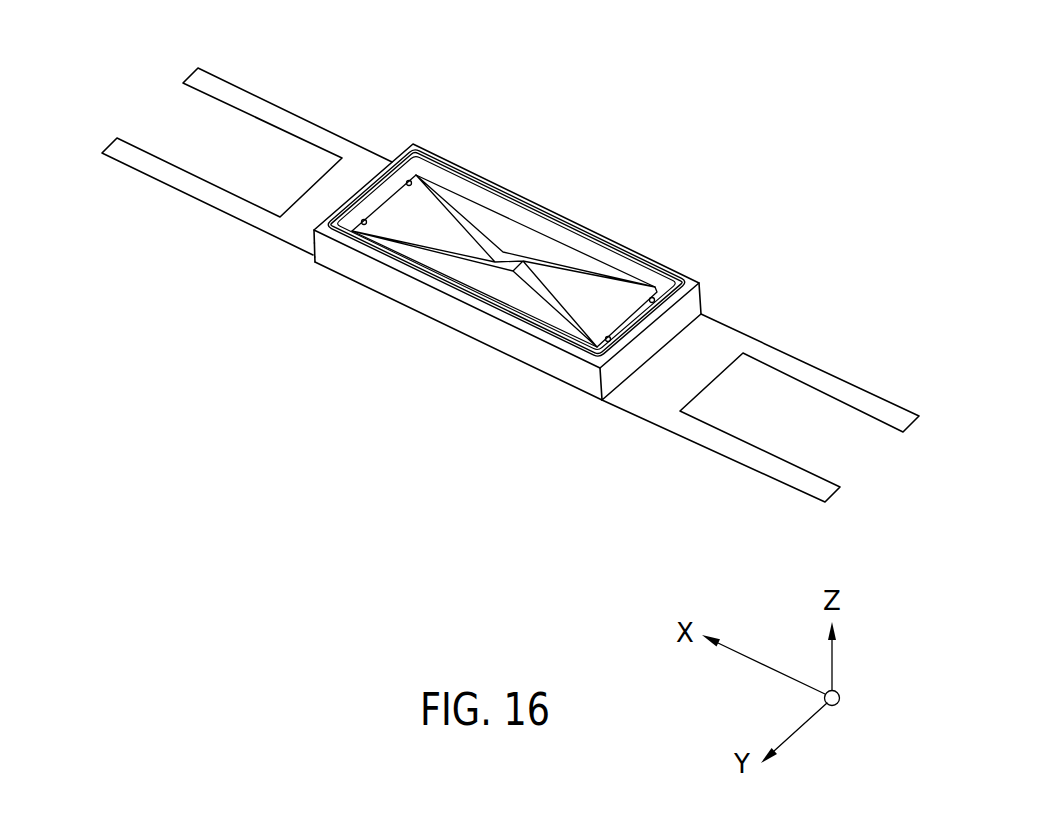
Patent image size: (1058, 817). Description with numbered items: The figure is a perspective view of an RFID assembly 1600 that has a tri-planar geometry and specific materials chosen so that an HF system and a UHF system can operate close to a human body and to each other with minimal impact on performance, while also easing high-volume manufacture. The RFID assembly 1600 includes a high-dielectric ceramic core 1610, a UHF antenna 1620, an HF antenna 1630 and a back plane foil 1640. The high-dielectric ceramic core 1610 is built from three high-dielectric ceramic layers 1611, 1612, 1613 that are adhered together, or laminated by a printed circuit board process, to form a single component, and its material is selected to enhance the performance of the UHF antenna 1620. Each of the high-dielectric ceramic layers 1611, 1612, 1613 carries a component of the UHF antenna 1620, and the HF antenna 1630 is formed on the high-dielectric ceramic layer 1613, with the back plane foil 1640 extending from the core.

The RFID assembly 1600 is at (684, 66).
The high-dielectric ceramic core 1610 is at (704, 298).
The high-dielectric ceramic layer 1611 is at (303, 271).
The high-dielectric ceramic layer 1612 is at (298, 260).
The high-dielectric ceramic layer 1613 is at (301, 239).
The UHF antenna 1620 is at (571, 193).
The HF antenna 1630 is at (628, 250).
The back plane foil 1640 is at (790, 352).